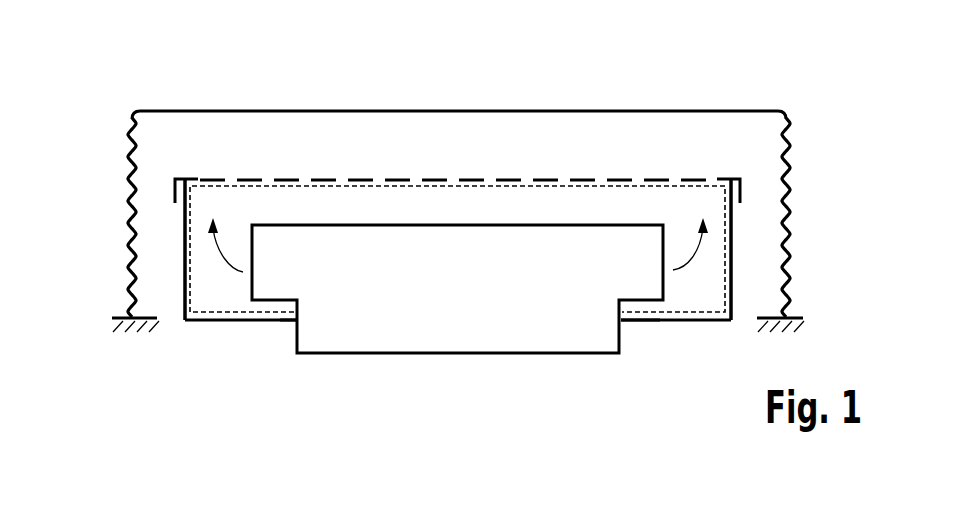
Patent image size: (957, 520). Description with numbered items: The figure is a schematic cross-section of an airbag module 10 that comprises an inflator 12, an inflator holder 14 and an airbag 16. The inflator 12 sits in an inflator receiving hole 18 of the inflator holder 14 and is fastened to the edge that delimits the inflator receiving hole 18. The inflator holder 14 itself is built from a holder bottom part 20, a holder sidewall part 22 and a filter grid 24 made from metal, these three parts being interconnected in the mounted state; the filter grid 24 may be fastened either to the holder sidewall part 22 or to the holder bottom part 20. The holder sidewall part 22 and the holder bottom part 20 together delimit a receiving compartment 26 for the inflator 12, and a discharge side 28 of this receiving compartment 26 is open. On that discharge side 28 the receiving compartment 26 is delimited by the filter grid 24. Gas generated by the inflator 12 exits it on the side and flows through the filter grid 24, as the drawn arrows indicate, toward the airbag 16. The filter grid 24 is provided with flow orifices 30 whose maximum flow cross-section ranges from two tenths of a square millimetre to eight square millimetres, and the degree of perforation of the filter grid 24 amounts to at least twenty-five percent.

The airbag module 10 is at (680, 84).
The inflator 12 is at (473, 319).
The inflator holder 14 is at (678, 332).
The airbag 16 is at (793, 195).
The inflator receiving hole 18 is at (291, 325).
The holder bottom part 20 is at (215, 321).
The holder sidewall part 22 is at (183, 272).
The filter grid 24 is at (583, 180).
The receiving compartment 26 is at (725, 272).
The discharge side 28 is at (385, 186).
The flow orifices 30 is at (458, 180).